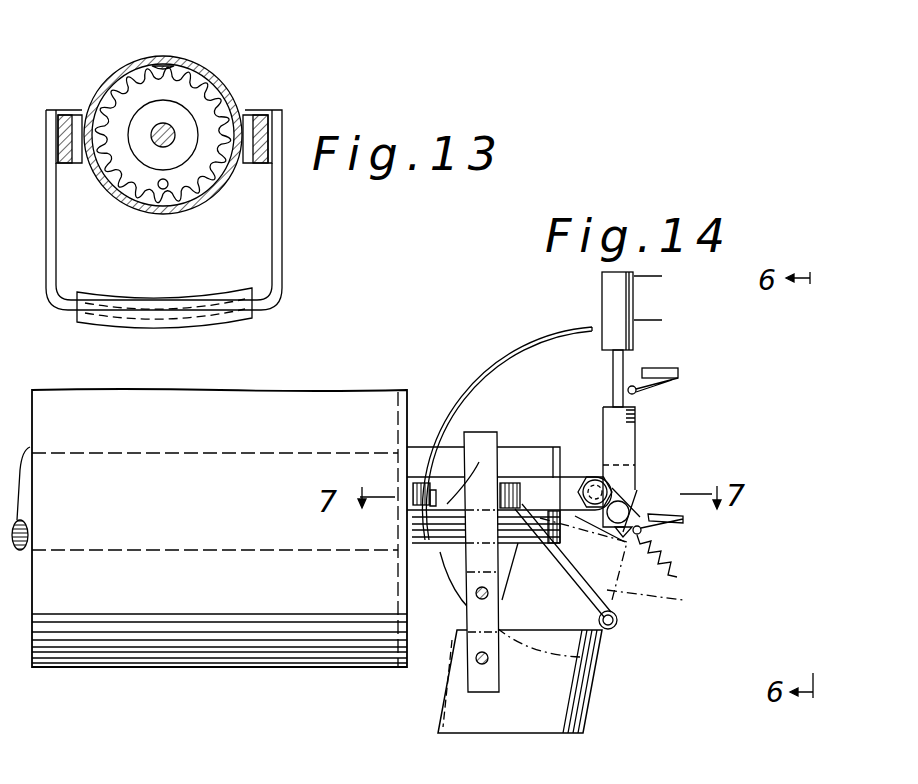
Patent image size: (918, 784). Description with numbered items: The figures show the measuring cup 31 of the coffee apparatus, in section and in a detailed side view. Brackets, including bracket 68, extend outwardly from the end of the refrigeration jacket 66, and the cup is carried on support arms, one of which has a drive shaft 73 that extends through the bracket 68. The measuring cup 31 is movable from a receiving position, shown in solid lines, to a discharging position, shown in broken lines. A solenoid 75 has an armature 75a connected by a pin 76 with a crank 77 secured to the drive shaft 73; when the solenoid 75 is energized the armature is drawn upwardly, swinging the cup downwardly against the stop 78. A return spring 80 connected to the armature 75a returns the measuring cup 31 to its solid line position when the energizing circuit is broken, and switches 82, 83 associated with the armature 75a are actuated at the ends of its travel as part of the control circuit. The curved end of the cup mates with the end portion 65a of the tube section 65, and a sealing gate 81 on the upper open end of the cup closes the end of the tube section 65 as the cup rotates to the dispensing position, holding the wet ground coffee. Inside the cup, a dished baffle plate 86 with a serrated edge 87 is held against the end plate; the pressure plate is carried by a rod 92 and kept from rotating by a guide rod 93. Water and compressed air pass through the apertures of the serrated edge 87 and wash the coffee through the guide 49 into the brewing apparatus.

In FIG. 13, the measuring cup 31 is at (198, 60).
In FIG. 14, the measuring cup 31 is at (520, 447).
In FIG. 14, the guide 49 is at (590, 690).
In FIG. 14, the tube section 65 is at (28, 449).
In FIG. 14, the end portion of tube section 65a is at (440, 462).
In FIG. 14, the refrigeration jacket 66 is at (350, 650).
In FIG. 14, the bracket 68 is at (422, 524).
In FIG. 14, the drive shaft 73 is at (594, 478).
In FIG. 14, the solenoid 75 is at (634, 304).
In FIG. 14, the solenoid armature 75a is at (636, 428).
In FIG. 14, the pin 76 is at (640, 478).
In FIG. 14, the crank 77 is at (640, 506).
In FIG. 13, the stop 78 is at (150, 300).
In FIG. 14, the stop 78 is at (618, 621).
In FIG. 14, the return spring 80 is at (680, 553).
In FIG. 14, the sealing gate 81 is at (470, 376).
In FIG. 14, the switch 82 is at (665, 368).
In FIG. 14, the switch 83 is at (684, 518).
In FIG. 13, the dished baffle plate 86 is at (140, 190).
In FIG. 13, the serrated edge 87 is at (162, 68).
In FIG. 13, the rod 92 is at (166, 133).
In FIG. 13, the guide rod 93 is at (167, 188).